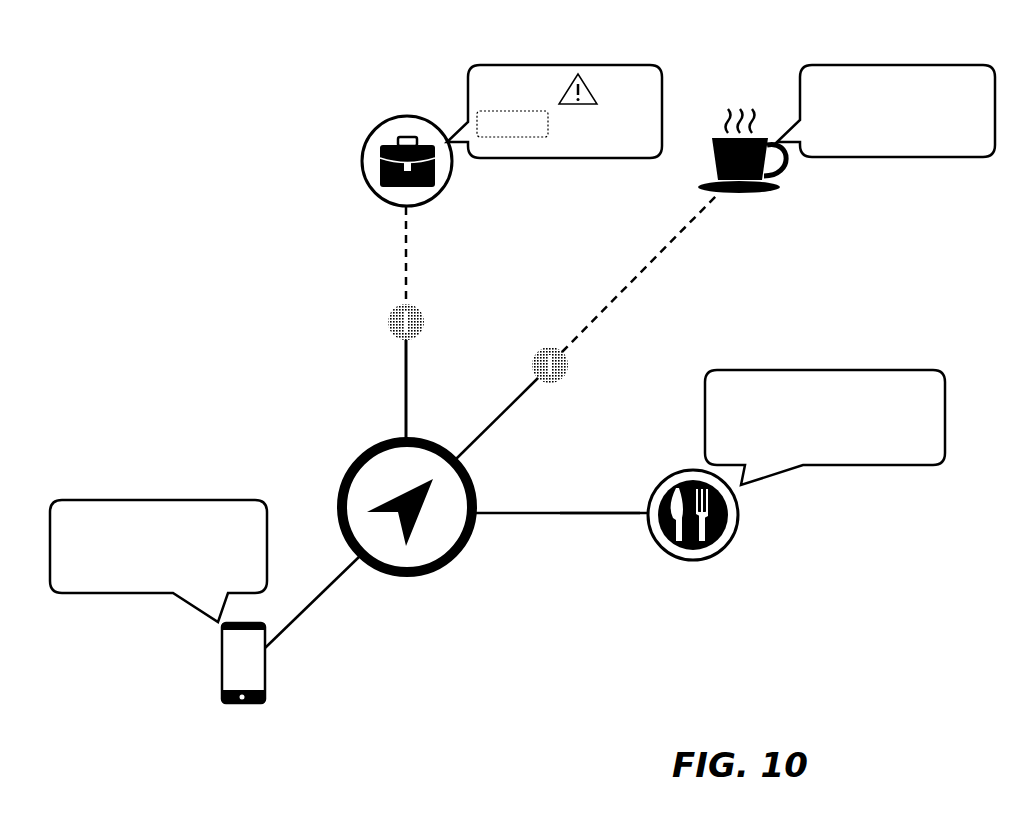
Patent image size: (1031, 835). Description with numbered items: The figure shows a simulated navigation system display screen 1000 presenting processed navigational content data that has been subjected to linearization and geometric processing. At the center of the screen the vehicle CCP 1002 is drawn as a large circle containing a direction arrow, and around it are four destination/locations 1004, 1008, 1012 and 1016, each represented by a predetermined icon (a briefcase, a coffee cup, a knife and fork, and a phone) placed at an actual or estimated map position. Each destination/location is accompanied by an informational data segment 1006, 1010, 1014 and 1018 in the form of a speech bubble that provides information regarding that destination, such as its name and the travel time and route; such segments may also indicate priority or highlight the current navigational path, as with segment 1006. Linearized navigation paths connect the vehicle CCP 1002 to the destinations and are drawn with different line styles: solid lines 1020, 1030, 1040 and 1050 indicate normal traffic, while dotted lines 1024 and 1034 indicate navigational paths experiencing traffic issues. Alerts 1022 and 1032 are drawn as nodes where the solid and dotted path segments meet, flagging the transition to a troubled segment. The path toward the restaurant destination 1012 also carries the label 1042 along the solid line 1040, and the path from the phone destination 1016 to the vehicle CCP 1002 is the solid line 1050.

The navigation system display screen 1000 is at (188, 197).
The vehicle CCP 1002 is at (430, 568).
The destination/location 1004 is at (425, 195).
The informational data segment 1006 is at (662, 72).
The destination/location 1008 is at (778, 189).
The informational data segment 1010 is at (912, 64).
The destination/location 1012 is at (728, 543).
The informational data segment 1014 is at (828, 370).
The destination/location 1016 is at (264, 695).
The informational data segment 1018 is at (132, 500).
The solid line 1020 is at (404, 405).
The alert 1022 is at (392, 322).
The dotted line 1024 is at (404, 250).
The solid line 1030 is at (490, 420).
The alert 1032 is at (536, 357).
The dotted line 1034 is at (596, 318).
The solid line 1040 is at (540, 516).
The route segment 1042 is at (587, 512).
The route segment 1050 is at (322, 592).